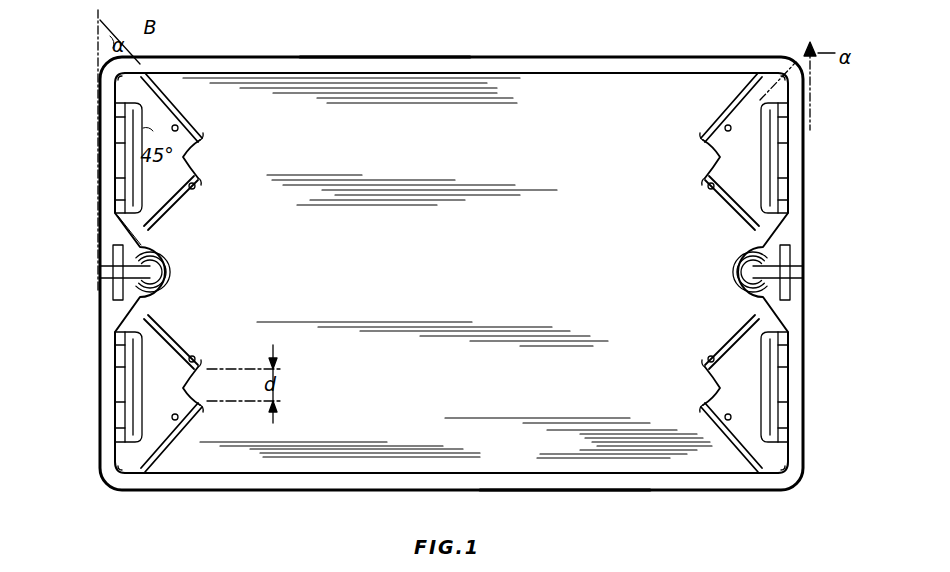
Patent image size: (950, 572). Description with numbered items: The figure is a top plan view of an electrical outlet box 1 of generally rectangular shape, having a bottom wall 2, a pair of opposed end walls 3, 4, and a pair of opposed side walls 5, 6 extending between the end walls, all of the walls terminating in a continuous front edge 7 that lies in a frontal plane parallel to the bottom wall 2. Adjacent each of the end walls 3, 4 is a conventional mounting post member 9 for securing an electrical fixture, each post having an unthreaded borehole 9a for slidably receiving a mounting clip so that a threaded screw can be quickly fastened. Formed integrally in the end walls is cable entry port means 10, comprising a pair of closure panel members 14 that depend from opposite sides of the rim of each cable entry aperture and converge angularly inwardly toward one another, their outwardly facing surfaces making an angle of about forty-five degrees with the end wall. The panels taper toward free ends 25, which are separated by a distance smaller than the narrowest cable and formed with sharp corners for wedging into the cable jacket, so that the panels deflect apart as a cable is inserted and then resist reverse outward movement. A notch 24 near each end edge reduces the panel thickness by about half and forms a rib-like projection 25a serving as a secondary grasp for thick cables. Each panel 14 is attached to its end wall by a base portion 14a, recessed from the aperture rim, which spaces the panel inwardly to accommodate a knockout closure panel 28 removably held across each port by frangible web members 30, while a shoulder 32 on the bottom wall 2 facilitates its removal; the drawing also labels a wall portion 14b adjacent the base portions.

The electrical outlet box 1 is at (661, 42).
The bottom wall 2 is at (425, 270).
The end wall 3 is at (98, 181).
The end wall 4 is at (802, 212).
The side wall 5 is at (283, 55).
The side wall 6 is at (313, 488).
The continuous front edge 7 is at (383, 60).
The mounting post member 9 is at (174, 264).
The unthreaded borehole 9a is at (110, 273).
The cable entry port means 10 is at (210, 311).
The closure panel member 14 is at (160, 102).
The base portion 14a is at (118, 86).
The inclined wall portion 14b is at (130, 222).
The notch 24 is at (186, 156).
The free end 25 is at (203, 137).
The rib-like projection 25a is at (188, 127).
The knockout closure panel 28 is at (125, 139).
The frangible web member 30 is at (107, 163).
The shoulder 32 is at (120, 112).